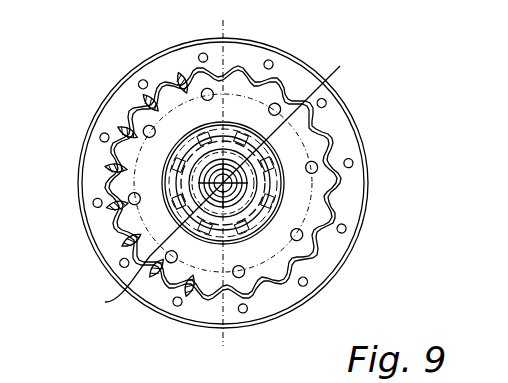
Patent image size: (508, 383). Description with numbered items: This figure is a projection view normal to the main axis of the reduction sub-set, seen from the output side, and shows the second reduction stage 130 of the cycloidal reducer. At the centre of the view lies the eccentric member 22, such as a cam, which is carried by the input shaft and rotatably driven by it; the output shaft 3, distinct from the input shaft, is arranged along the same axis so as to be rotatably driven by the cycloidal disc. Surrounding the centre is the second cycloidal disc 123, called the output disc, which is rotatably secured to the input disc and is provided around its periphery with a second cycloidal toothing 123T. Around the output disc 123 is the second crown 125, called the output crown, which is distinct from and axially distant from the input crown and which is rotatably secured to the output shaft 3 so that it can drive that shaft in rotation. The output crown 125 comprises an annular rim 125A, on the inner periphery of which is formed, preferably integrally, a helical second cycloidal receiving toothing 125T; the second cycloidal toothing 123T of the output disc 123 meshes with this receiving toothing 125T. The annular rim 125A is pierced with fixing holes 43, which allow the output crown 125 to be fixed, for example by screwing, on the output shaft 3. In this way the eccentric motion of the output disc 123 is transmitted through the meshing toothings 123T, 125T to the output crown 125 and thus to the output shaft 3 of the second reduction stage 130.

The output shaft 3 is at (204, 182).
The eccentric member 22 is at (248, 183).
The fixing holes 43 is at (346, 232).
The second cycloidal disc 123 is at (280, 100).
The second cycloidal toothing 123T is at (328, 131).
The second crown 125 is at (100, 119).
The annular rim 125A is at (178, 66).
The second cycloidal receiving toothing 125T is at (140, 106).
The second reduction stage 130 is at (377, 140).